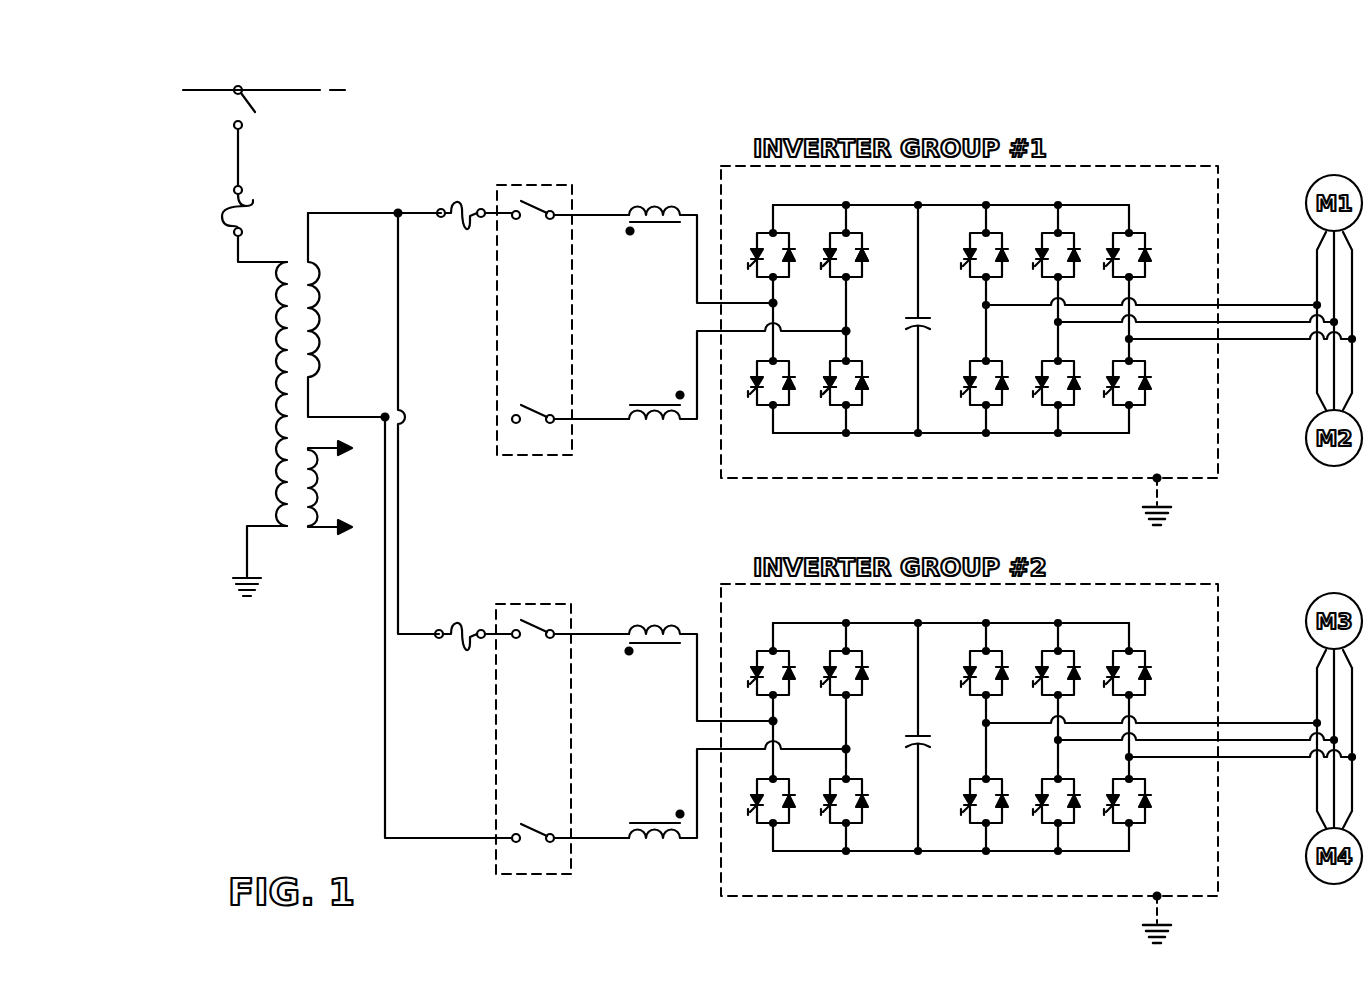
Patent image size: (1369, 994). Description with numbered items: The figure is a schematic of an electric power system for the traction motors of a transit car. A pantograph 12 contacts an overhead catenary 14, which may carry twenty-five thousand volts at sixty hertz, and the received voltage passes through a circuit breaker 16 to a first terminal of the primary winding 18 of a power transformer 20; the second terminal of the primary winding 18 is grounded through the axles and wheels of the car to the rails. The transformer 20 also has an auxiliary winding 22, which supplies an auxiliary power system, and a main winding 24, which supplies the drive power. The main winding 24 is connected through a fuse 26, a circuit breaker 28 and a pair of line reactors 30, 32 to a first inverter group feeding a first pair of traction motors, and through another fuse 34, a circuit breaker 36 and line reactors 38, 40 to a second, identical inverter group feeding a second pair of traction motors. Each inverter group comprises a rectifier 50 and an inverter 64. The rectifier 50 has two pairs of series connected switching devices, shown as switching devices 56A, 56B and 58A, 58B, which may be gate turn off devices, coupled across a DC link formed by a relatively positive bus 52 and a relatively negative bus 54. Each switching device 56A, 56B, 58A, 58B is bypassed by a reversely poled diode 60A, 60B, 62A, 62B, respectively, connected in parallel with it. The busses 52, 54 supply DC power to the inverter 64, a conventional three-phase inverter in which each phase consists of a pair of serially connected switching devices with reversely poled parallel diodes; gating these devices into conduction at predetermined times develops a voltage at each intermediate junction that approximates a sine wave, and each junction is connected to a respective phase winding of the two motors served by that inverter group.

The pantograph 12 is at (256, 112).
The overhead catenary 14 is at (300, 90).
The circuit breaker 16 is at (253, 201).
The primary winding 18 is at (278, 305).
The power transformer 20 is at (292, 528).
The auxiliary winding 22 is at (328, 529).
The main winding 24 is at (315, 283).
The fuse 26 is at (468, 231).
The circuit breaker 28 is at (515, 456).
The line reactor 30 is at (680, 225).
The line reactor 32 is at (662, 405).
The fuse 34 is at (462, 652).
The circuit breaker 36 is at (515, 875).
The line reactor 38 is at (680, 645).
The line reactor 40 is at (662, 824).
The rectifier 50 is at (842, 194).
The relatively positive bus 52 is at (890, 205).
The relatively negative bus 54 is at (873, 434).
The switching device 56A is at (758, 258).
The switching device 56B is at (758, 388).
The switching device 58A is at (828, 258).
The switching device 58B is at (828, 386).
The reversely poled diode 60A is at (795, 262).
The reversely poled diode 60B is at (795, 392).
The reversely poled diode 62A is at (860, 258).
The reversely poled diode 62B is at (860, 386).
The inverter 64 is at (1078, 205).